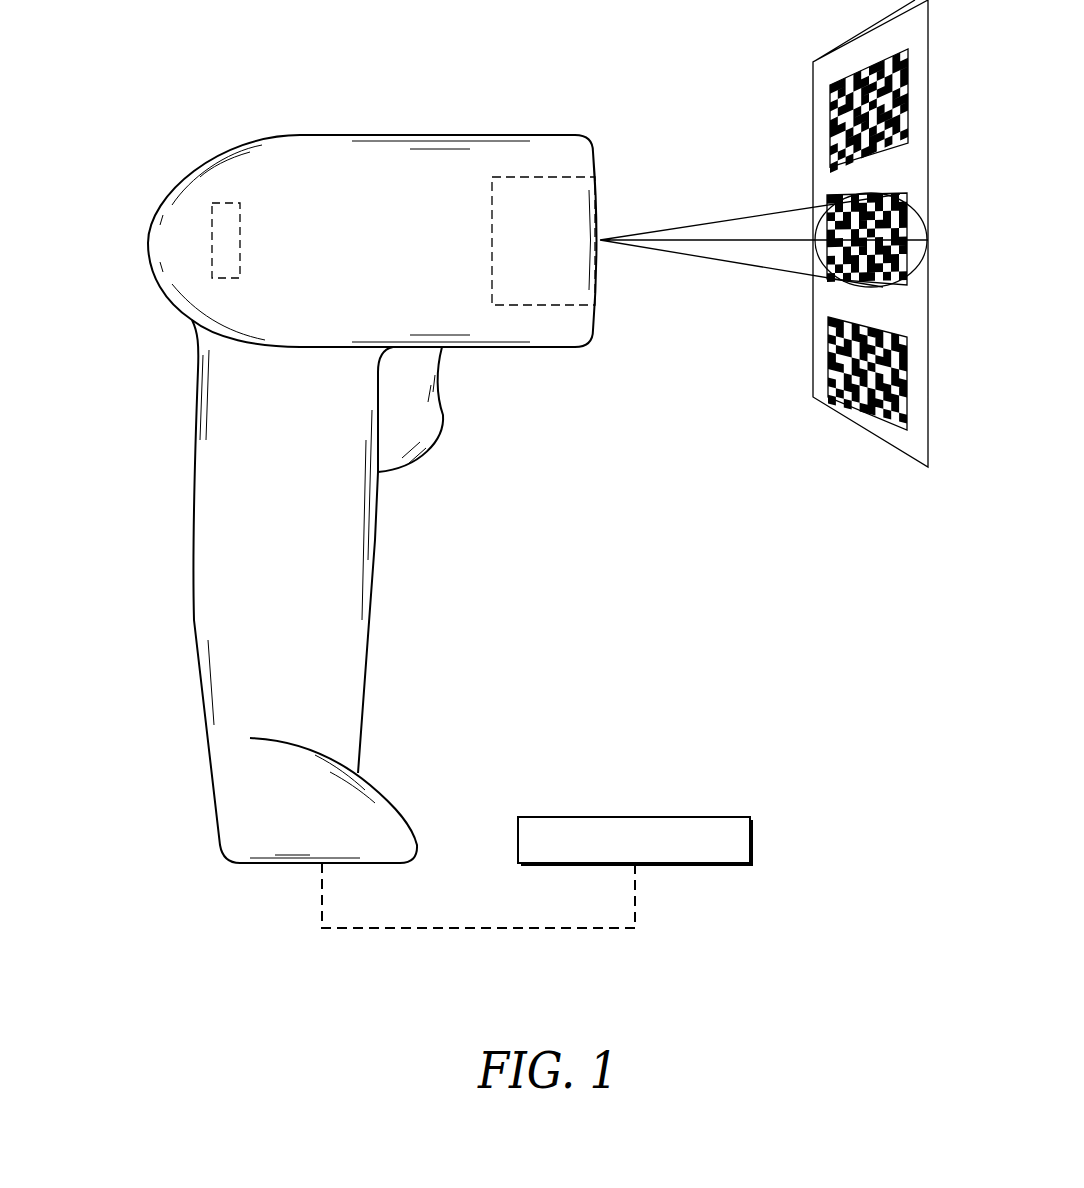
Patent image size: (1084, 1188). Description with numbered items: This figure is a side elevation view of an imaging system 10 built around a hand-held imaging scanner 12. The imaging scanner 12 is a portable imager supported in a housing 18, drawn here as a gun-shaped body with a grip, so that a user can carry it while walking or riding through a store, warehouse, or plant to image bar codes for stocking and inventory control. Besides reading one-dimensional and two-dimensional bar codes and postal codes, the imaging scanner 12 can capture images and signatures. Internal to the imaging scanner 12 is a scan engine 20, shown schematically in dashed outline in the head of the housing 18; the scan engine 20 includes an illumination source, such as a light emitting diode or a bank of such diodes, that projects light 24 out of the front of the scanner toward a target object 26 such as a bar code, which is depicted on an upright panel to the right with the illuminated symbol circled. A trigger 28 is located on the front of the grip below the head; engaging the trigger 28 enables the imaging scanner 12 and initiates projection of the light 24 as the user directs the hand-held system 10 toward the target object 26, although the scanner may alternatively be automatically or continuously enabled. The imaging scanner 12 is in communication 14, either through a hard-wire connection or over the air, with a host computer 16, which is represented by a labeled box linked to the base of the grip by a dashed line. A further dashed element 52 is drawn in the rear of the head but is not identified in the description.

The imaging system 10 is at (130, 403).
The imaging scanner 12 is at (443, 135).
The communication 14 is at (322, 895).
The host computer 16 is at (735, 815).
The housing 18 is at (375, 538).
The scan engine 20 is at (492, 240).
The light 24 is at (742, 268).
The target object 26 is at (872, 194).
The trigger 28 is at (428, 420).
The indicator 52 is at (240, 238).